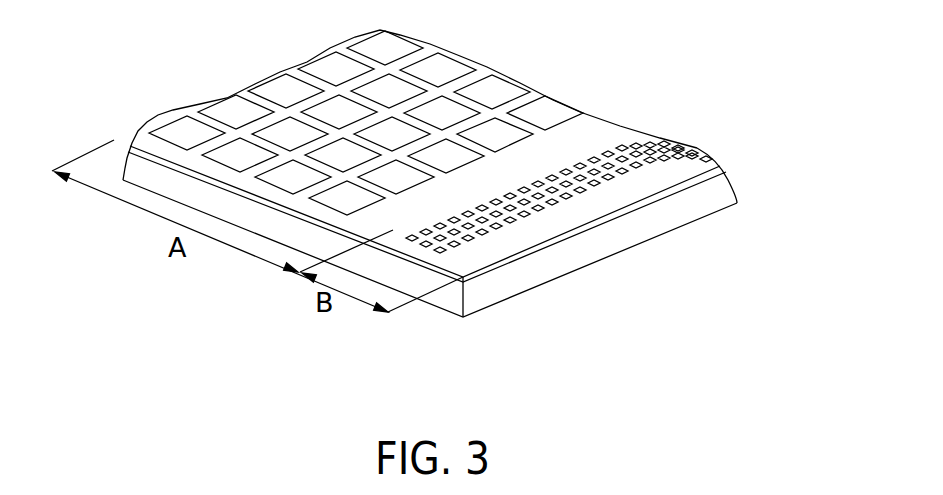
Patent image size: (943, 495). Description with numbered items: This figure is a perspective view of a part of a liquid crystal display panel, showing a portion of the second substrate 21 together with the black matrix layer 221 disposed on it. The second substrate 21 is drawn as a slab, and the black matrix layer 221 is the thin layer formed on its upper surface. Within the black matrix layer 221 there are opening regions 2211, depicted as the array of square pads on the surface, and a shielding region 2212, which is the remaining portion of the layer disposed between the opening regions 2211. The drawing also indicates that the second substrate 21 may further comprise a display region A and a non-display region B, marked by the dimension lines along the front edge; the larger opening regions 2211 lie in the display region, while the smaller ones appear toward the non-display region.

The second substrate 21 is at (723, 183).
The black matrix layer 221 is at (727, 165).
The opening regions 2211 is at (497, 97).
The shielding region 2212 is at (590, 137).